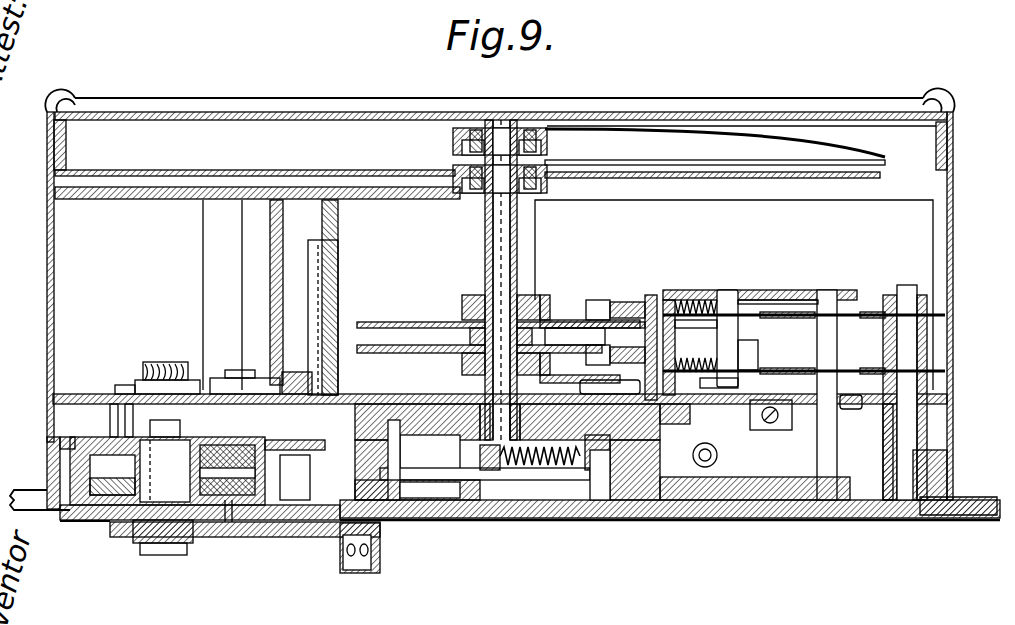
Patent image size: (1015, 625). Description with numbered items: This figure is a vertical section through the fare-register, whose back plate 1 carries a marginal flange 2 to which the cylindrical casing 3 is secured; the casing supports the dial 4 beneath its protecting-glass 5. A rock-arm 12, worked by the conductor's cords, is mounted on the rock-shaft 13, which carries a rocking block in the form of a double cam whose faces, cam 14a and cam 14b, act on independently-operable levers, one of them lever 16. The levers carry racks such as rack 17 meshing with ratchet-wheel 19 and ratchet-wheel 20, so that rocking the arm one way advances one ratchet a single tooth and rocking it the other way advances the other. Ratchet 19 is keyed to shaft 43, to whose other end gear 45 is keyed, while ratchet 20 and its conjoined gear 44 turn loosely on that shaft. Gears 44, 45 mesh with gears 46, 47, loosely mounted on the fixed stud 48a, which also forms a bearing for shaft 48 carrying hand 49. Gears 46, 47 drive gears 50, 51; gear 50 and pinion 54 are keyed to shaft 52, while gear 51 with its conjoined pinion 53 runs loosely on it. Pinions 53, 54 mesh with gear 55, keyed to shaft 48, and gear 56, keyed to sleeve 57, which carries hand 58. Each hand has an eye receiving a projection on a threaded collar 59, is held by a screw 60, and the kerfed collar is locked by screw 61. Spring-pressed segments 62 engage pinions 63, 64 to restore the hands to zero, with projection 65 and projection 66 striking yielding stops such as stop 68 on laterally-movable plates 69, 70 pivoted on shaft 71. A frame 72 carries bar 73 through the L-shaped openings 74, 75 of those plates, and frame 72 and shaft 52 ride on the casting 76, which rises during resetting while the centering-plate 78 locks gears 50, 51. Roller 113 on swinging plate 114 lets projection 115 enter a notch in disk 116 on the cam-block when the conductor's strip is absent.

The back plate 1 is at (562, 518).
The marginal flange 2 is at (48, 474).
The cylindrical casing 3 is at (47, 322).
The dial 4 is at (298, 170).
The protecting-glass 5 is at (630, 113).
The rock-arm 12 is at (274, 538).
The rock-shaft 13 is at (165, 542).
The cam 14a is at (95, 465).
The cam 14b is at (118, 485).
The lever 16 is at (218, 455).
The rack 17 is at (228, 522).
The ratchet-wheel 19 is at (393, 492).
The ratchet-wheel 20 is at (420, 470).
The shaft 43 is at (343, 538).
The gear 44 is at (430, 385).
The gear 45 is at (384, 385).
The gear 46 is at (507, 442).
The gear 47 is at (560, 384).
The shaft 48 is at (497, 252).
The fixed stud 48a is at (505, 470).
The hand 49 is at (655, 132).
The gear 50 is at (622, 462).
The gear 51 is at (610, 396).
The shaft 52 is at (660, 392).
The pinion 53 is at (696, 336).
The pinion 54 is at (696, 330).
The gear 55 is at (575, 339).
The gear 56 is at (548, 322).
The sleeve 57 is at (518, 273).
The hand 58 is at (700, 160).
The collar 59 is at (548, 144).
The screw 60 is at (545, 130).
The screw 61 is at (478, 130).
The spring-pressed segment 62 is at (627, 357).
The pinion 63 is at (557, 360).
The pinion 64 is at (548, 303).
The projection 65 is at (609, 346).
The projection 66 is at (598, 300).
The yielding stop 68 is at (618, 300).
The laterally-movable plate 69 is at (770, 372).
The laterally-movable plate 70 is at (804, 326).
The shaft 71 is at (905, 295).
The frame 72 is at (800, 291).
The bar 73 is at (738, 352).
The L-shaped opening 74 is at (740, 318).
The L-shaped opening 75 is at (737, 375).
The casting 76 is at (738, 520).
The centering-plate 78 is at (760, 425).
The roller 113 is at (218, 378).
The swinging plate 114 is at (140, 385).
The projection 115 is at (118, 412).
The disk 116 is at (60, 437).